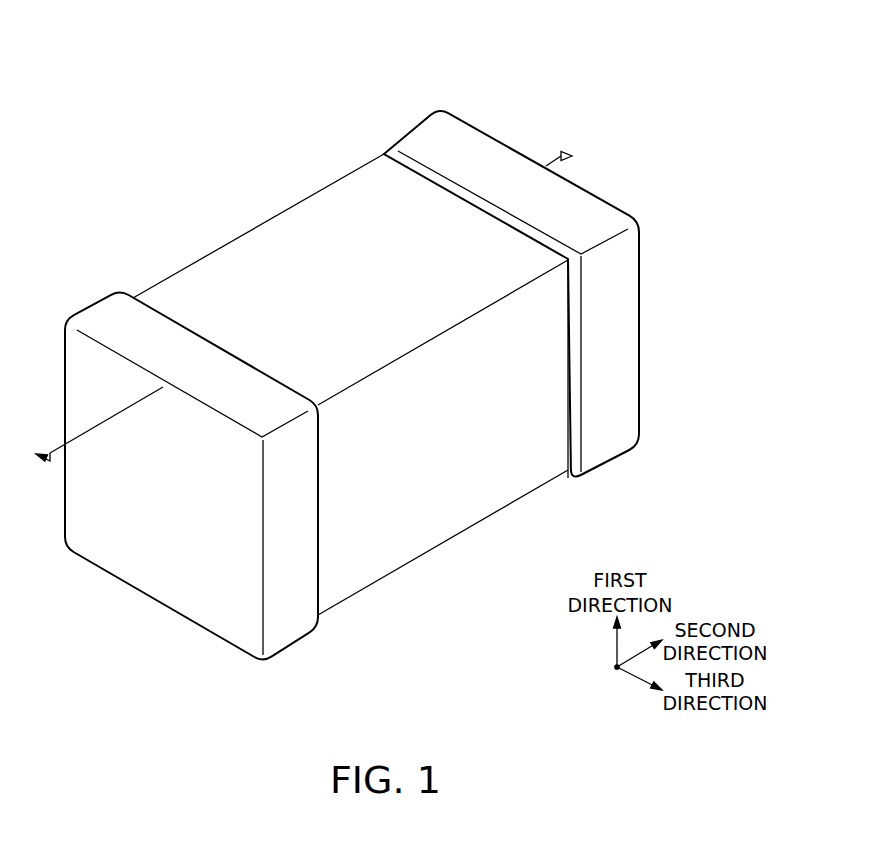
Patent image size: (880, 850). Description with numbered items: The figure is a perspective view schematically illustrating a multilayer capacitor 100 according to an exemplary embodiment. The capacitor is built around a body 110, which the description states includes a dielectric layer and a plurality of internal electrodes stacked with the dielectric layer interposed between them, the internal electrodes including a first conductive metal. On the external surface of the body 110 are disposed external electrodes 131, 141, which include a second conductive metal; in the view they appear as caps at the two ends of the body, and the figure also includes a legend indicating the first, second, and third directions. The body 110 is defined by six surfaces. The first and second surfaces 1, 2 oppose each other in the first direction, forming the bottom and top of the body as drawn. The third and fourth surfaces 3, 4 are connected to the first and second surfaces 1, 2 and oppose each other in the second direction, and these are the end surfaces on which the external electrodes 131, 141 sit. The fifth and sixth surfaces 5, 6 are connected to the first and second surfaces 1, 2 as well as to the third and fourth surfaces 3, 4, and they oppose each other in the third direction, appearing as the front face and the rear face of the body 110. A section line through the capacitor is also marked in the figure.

The multilayer capacitor 100 is at (190, 52).
The body 110 is at (282, 228).
The first surface 1 is at (417, 550).
The second surface 2 is at (362, 200).
The third surface 3 is at (148, 558).
The fourth surface 4 is at (515, 158).
The fifth surface 5 is at (505, 473).
The sixth surface 6 is at (192, 275).
The external electrode 131 is at (100, 310).
The external electrode 141 is at (430, 125).